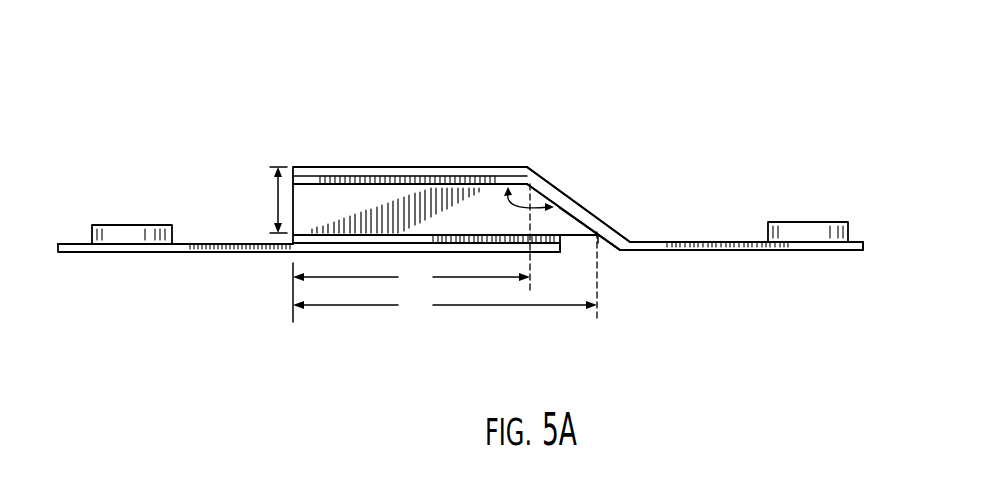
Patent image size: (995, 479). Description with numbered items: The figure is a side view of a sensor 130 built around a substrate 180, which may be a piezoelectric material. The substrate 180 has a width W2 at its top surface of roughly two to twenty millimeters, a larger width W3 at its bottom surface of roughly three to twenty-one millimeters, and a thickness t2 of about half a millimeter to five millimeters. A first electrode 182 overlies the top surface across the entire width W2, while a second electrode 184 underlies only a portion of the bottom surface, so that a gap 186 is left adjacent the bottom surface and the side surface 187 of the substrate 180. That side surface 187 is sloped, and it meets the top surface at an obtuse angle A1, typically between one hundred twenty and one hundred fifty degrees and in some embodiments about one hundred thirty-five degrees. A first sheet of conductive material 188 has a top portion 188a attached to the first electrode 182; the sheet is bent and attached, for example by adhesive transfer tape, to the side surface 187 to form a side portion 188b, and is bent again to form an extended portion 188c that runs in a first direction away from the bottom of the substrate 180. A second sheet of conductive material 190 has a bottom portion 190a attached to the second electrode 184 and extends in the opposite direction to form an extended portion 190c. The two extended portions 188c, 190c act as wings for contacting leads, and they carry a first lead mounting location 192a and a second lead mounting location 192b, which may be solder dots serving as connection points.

The sensor 130 is at (336, 92).
The substrate 180 is at (328, 203).
The first electrode 182 is at (457, 180).
The second electrode 184 is at (358, 237).
The gap 186 is at (578, 250).
The side surface 187 is at (585, 222).
The first sheet of conductive material 188 is at (393, 168).
The top portion 188a is at (442, 172).
The side portion 188b is at (580, 222).
The extended portion 188c is at (725, 247).
The second sheet of conductive material 190 is at (297, 253).
The bottom portion 190a is at (390, 247).
The extended portion 190c is at (202, 253).
The first lead mounting location 192a is at (815, 227).
The second lead mounting location 192b is at (123, 228).
The obtuse angle A1 is at (535, 200).
The thickness t2 is at (272, 210).
The width W2 is at (411, 253).
The width W3 is at (445, 277).